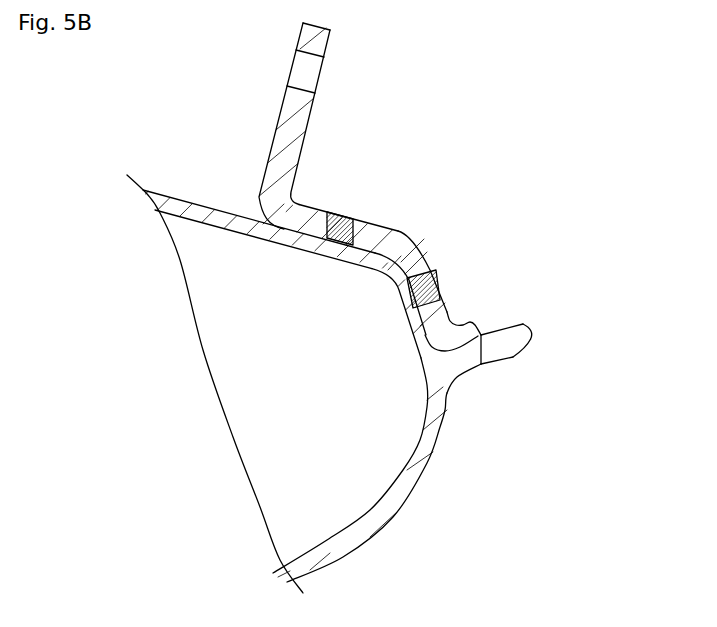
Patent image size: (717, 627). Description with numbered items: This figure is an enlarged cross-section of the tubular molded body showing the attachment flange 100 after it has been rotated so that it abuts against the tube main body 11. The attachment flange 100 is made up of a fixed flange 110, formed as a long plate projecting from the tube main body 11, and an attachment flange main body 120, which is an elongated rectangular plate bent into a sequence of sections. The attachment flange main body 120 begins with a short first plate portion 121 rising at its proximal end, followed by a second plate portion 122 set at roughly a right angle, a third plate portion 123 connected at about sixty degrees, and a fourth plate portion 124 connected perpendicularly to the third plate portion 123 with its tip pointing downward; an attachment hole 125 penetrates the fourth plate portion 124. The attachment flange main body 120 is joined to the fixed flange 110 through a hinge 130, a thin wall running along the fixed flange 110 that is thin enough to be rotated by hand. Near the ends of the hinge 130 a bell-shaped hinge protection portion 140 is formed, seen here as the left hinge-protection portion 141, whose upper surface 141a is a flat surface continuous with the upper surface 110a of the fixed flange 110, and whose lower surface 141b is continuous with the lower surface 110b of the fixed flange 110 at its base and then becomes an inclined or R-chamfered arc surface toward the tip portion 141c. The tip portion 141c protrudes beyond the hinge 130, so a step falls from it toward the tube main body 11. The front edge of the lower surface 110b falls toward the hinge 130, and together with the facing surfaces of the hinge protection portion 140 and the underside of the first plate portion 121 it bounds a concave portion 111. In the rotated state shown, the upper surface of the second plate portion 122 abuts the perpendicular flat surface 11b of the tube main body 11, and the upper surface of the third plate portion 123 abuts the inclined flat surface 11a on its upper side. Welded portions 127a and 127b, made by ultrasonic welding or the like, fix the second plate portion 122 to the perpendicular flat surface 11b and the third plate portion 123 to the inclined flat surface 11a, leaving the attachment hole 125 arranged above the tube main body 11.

The attachment flange 100 is at (544, 131).
The tube main body 11 is at (157, 203).
The inclined flat surface 11a is at (224, 199).
The perpendicular flat surface 11b is at (408, 252).
The fixed flange 110 is at (411, 450).
The upper surface of the fixed flange 110a is at (425, 343).
The lower surface of the fixed flange 110b is at (469, 382).
The concave portion 111 is at (538, 386).
The attachment flange main body 120 is at (347, 175).
The first plate portion 121 is at (463, 320).
The second plate portion 122 is at (430, 262).
The third plate portion 123 is at (378, 224).
The fourth plate portion 124 is at (317, 100).
The attachment hole 125 is at (305, 68).
The welded portion 127a is at (433, 274).
The welded portion 127b is at (342, 212).
The hinge 130 is at (488, 326).
The hinge protection portion 140 is at (574, 369).
The left hinge-protection portion 141 is at (574, 356).
The upper surface of the left hinge-protection portion 141a is at (528, 316).
The lower surface of the left hinge-protection portion 141b is at (534, 346).
The tip portion of the left hinge-protection portion 141c is at (537, 326).